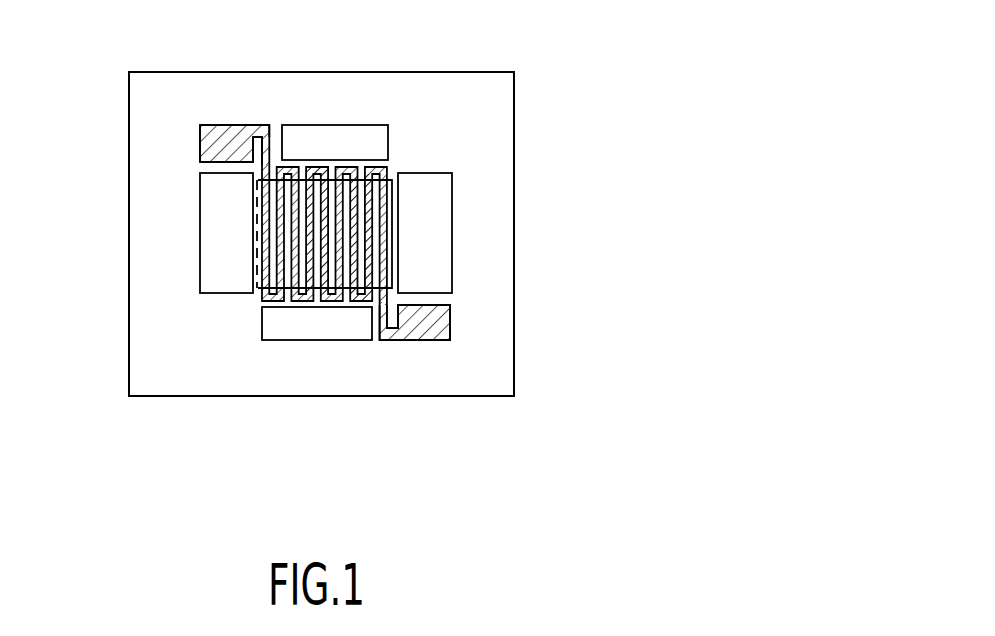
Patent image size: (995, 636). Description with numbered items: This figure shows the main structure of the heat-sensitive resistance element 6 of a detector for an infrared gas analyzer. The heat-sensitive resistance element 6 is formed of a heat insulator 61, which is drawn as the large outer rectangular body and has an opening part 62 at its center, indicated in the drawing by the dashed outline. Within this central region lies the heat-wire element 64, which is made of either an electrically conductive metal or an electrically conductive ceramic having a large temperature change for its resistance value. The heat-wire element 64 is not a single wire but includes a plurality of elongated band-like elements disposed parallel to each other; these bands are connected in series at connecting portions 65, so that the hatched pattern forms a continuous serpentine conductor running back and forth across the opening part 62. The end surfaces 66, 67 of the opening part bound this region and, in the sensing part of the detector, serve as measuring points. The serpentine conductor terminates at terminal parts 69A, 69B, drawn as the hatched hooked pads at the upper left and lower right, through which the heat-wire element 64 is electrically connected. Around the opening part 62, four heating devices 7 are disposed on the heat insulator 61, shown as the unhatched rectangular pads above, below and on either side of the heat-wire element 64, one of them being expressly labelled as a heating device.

The heat-sensitive resistance element 6 is at (453, 103).
The heating devices 7 is at (342, 142).
The heat insulator 61 is at (495, 343).
The opening part 62 is at (392, 258).
The heat-wire element 64 is at (358, 236).
The connecting portions 65 is at (288, 165).
The end surface of the opening part 66 is at (316, 172).
The end surface of the opening part 67 is at (366, 288).
The terminal part 69A is at (217, 143).
The terminal part 69B is at (428, 330).